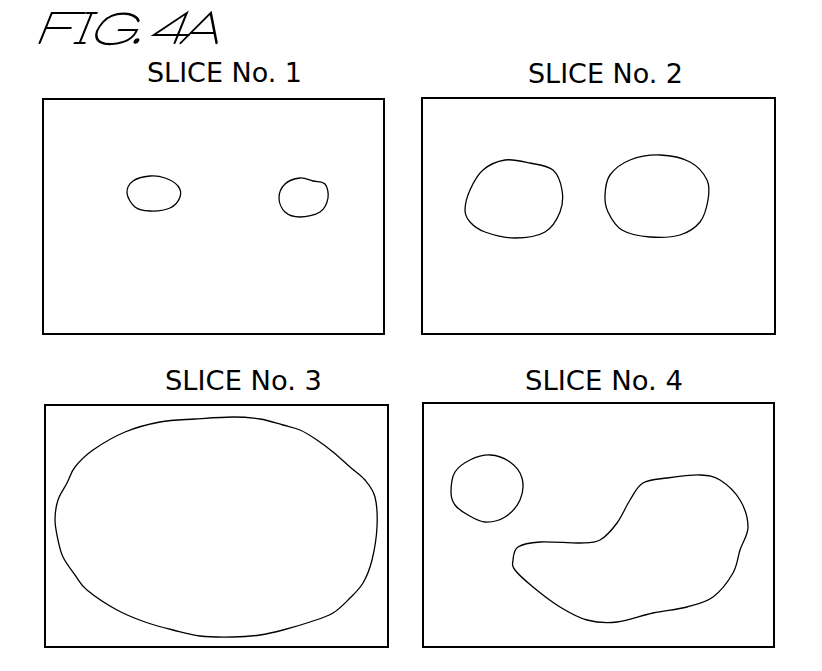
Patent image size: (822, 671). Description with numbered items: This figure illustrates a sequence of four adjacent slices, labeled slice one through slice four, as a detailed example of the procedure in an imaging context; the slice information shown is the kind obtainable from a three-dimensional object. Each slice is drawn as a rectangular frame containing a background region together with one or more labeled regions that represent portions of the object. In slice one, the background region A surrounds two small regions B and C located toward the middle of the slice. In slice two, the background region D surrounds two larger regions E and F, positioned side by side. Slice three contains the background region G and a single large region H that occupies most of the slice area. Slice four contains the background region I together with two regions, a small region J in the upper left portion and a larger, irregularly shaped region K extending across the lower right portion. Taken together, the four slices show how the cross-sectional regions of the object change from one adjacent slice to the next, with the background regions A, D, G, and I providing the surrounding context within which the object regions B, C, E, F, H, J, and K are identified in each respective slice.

The background region A is at (213, 216).
The region B is at (154, 193).
The region C is at (303, 197).
The background region D is at (598, 216).
The region E is at (514, 199).
The region F is at (657, 196).
The background region G is at (216, 526).
The region H is at (216, 527).
The background region I is at (598, 525).
The region J is at (487, 488).
The region K is at (630, 549).